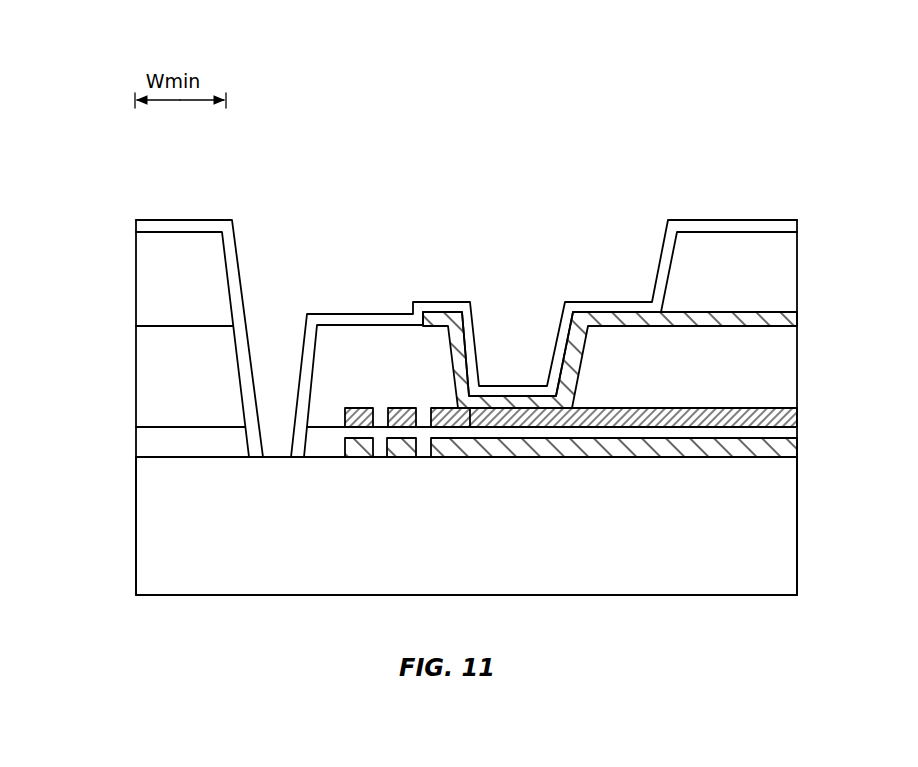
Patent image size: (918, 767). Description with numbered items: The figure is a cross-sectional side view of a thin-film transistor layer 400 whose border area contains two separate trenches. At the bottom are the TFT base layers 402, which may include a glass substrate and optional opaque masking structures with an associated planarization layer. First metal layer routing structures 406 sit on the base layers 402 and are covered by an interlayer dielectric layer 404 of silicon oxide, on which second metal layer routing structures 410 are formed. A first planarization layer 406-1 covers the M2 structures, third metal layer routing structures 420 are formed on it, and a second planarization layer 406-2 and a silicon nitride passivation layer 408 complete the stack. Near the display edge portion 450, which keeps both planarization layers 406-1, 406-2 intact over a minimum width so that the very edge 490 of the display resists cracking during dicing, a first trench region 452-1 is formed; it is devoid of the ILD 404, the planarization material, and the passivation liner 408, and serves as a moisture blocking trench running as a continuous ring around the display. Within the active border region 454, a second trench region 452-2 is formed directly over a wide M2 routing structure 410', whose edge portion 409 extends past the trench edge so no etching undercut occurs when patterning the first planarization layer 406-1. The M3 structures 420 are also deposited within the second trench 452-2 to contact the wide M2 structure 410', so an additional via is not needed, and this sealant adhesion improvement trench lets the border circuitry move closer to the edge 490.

The thin-film transistor layer 400 is at (99, 71).
The TFT base layers 402 is at (142, 525).
The interlayer dielectric layer 404 is at (142, 442).
The first metal layer routing structures 406 is at (402, 450).
The first planarization layer 406-1 is at (142, 373).
The second planarization layer 406-2 is at (142, 272).
The passivation layer 408 is at (185, 220).
The edge portion 409 is at (419, 405).
The second metal layer routing structures 410 is at (380, 396).
The wide second metal layer routing structure 410' is at (633, 397).
The third metal layer routing structures 420 is at (737, 312).
The display edge portion 450 is at (230, 171).
The first trench region 452-1 is at (306, 304).
The second trench region 452-2 is at (470, 280).
The active border region 454 is at (793, 509).
The display edge 490 is at (137, 606).